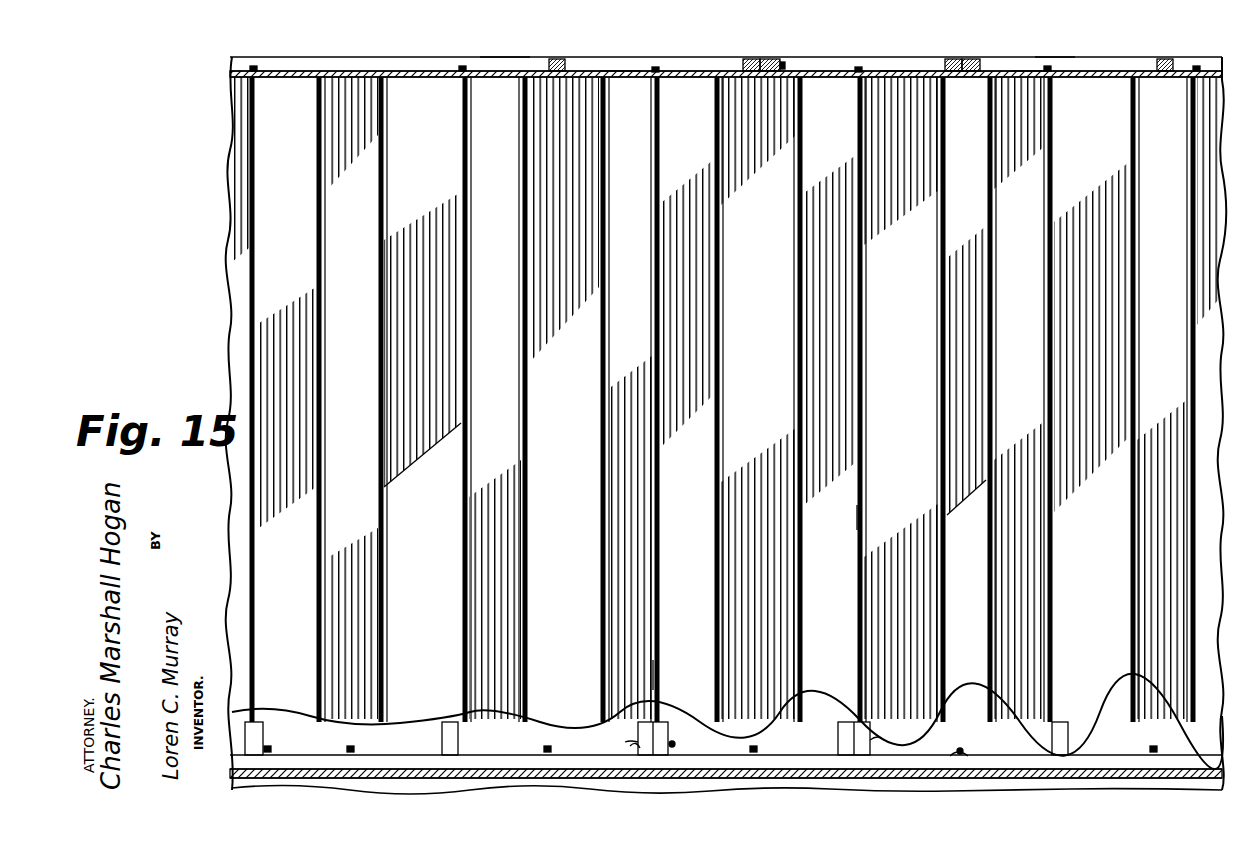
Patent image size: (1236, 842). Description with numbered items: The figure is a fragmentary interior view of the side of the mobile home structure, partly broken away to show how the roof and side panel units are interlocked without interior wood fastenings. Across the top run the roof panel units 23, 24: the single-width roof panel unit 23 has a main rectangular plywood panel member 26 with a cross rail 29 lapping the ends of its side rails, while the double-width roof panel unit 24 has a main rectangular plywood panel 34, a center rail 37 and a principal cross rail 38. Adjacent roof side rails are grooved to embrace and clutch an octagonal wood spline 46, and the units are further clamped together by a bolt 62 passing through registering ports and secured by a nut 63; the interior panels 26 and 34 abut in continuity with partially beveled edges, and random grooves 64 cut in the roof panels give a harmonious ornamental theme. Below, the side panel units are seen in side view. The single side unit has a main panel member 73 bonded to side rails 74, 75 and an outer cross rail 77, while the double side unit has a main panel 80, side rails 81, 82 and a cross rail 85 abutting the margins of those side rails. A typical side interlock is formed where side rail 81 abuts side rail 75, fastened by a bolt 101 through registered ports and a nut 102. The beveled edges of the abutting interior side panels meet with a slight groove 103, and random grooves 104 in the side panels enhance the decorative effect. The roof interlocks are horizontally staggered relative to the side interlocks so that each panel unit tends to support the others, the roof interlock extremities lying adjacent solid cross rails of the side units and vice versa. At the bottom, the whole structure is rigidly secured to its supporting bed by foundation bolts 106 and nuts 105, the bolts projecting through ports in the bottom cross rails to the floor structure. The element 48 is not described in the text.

The roof panel unit 23 is at (878, 57).
The roof panel unit 24 is at (627, 58).
The main rectangular plywood panel member 26 is at (893, 70).
The cross rail 29 is at (944, 62).
The main rectangular plywood panel 34 is at (670, 75).
The center rail 37 is at (560, 59).
The principal cross rail 38 is at (500, 68).
The octagonal wood spline 46 is at (772, 59).
The fastener 48 is at (858, 67).
The bolt 62 is at (742, 62).
The nut 63 is at (785, 66).
The random grooves 64 is at (710, 78).
The main panel member 73 is at (758, 400).
The side rail 74 is at (834, 726).
The side rail 75 is at (670, 732).
The cross rail 77 is at (812, 740).
The main panel 80 is at (829, 265).
The side rail 81 is at (636, 736).
The side rail 82 is at (872, 742).
The cross rail 85 is at (482, 758).
The bolt 101 is at (634, 746).
The nut 102 is at (676, 745).
The groove 103 is at (858, 526).
The random grooves 104 is at (520, 457).
The nut 105 is at (957, 751).
The foundation bolt 106 is at (958, 750).